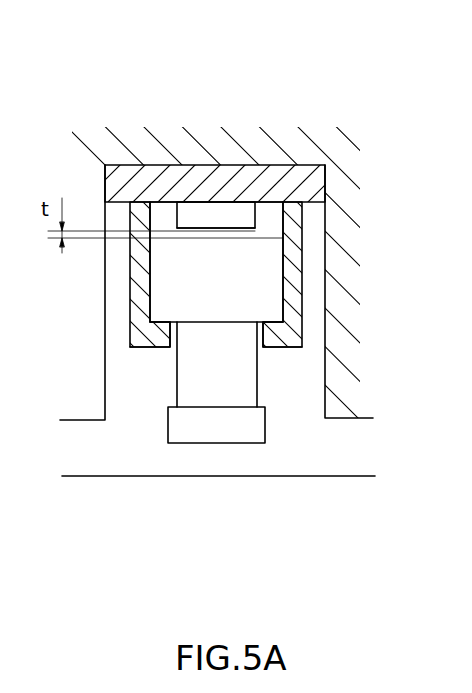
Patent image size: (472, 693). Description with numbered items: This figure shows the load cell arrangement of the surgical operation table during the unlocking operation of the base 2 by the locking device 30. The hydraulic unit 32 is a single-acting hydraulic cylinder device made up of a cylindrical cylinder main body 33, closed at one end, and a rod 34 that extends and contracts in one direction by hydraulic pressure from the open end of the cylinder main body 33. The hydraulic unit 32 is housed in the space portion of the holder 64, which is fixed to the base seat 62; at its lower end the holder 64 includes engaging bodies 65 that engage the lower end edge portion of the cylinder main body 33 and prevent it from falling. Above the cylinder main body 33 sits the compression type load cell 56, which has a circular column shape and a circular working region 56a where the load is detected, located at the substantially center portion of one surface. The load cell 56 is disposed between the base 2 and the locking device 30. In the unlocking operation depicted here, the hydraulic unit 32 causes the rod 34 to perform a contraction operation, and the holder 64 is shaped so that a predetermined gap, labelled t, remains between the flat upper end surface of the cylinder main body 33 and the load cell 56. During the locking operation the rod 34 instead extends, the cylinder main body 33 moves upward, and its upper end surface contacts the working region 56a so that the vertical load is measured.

The base 2 is at (110, 102).
The locking device 30 is at (150, 428).
The hydraulic unit 32 is at (289, 398).
The cylinder main body 33 is at (258, 290).
The rod 34 is at (255, 422).
The load cell 56 is at (222, 210).
The working region 56a is at (230, 231).
The base seat 62 is at (294, 186).
The holder 64 is at (138, 288).
The engaging bodies 65 is at (147, 348).